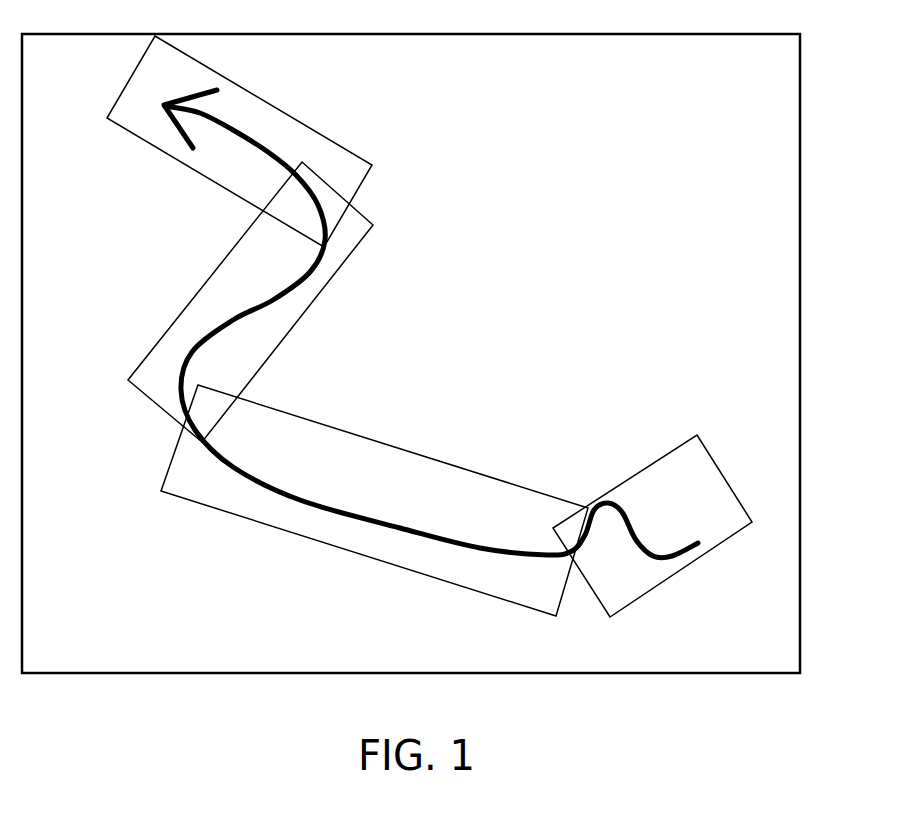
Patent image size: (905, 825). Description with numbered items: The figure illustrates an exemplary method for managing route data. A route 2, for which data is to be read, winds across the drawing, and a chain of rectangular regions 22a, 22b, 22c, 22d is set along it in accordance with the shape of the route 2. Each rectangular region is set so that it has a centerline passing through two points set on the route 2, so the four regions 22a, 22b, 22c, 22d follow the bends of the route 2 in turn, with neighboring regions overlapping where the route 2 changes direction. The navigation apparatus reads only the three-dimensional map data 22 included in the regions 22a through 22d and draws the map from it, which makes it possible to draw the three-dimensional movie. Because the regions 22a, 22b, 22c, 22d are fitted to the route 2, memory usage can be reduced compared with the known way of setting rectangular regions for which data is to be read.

The route 2 is at (240, 133).
The 3D map data 22 is at (801, 103).
The rectangular region 22a is at (707, 445).
The rectangular region 22b is at (507, 479).
The rectangular region 22c is at (360, 240).
The rectangular region 22d is at (354, 152).